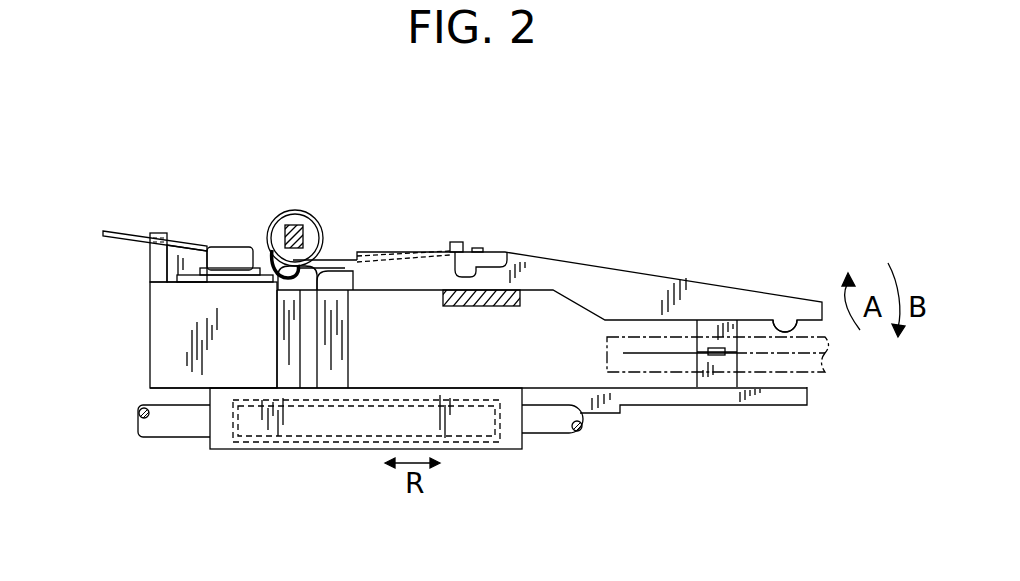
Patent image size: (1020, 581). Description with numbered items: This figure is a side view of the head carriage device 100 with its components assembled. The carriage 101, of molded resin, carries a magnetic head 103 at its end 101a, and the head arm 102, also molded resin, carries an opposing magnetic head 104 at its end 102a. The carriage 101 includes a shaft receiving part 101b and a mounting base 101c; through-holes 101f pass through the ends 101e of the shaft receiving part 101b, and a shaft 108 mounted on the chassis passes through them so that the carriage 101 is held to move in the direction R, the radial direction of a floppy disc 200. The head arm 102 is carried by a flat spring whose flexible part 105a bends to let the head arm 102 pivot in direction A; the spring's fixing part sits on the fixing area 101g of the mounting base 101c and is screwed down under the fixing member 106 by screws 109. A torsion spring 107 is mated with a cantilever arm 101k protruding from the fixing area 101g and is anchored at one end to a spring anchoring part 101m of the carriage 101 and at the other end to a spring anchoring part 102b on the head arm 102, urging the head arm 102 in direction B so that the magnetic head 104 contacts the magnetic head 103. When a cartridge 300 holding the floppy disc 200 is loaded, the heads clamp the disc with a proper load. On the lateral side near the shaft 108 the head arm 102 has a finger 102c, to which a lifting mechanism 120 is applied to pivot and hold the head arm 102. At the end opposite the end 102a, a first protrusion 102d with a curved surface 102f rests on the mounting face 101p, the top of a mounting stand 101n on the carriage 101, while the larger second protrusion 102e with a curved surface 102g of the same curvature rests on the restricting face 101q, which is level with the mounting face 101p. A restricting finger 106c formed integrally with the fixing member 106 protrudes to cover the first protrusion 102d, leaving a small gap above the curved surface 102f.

The head carriage device 100 is at (683, 152).
The carriage 101 is at (614, 440).
The end of carriage 101a is at (772, 390).
The shaft receiving part 101b is at (472, 426).
The mounting base 101c is at (172, 368).
The ends of shaft receiving part 101e is at (205, 450).
The through-holes 101f is at (217, 425).
The fixing area 101g is at (160, 236).
The cantilever arm 101k is at (291, 262).
The spring anchoring part 101m is at (143, 232).
The mounting stand 101n is at (333, 372).
The mounting face 101p is at (363, 293).
The restricting face 101q is at (276, 285).
The head arm 102 is at (617, 256).
The end of head arm 102a is at (793, 322).
The spring anchoring part 102b is at (458, 241).
The finger 102c is at (496, 247).
The first protrusion 102d is at (335, 282).
The second protrusion 102e is at (315, 278).
The curved surface 102f is at (296, 402).
The curved surface 102g is at (300, 291).
The magnetic head 103 is at (720, 375).
The magnetic head 104 is at (718, 332).
The flexible part 105a is at (290, 273).
The fixing member 106 is at (190, 248).
The restricting finger 106c is at (345, 265).
The torsion spring 107 is at (281, 210).
The shaft 108 is at (168, 425).
The screws 109 is at (228, 255).
The lifting mechanism 120 is at (490, 307).
The floppy disc 200 is at (672, 356).
The cartridge 300 is at (822, 373).